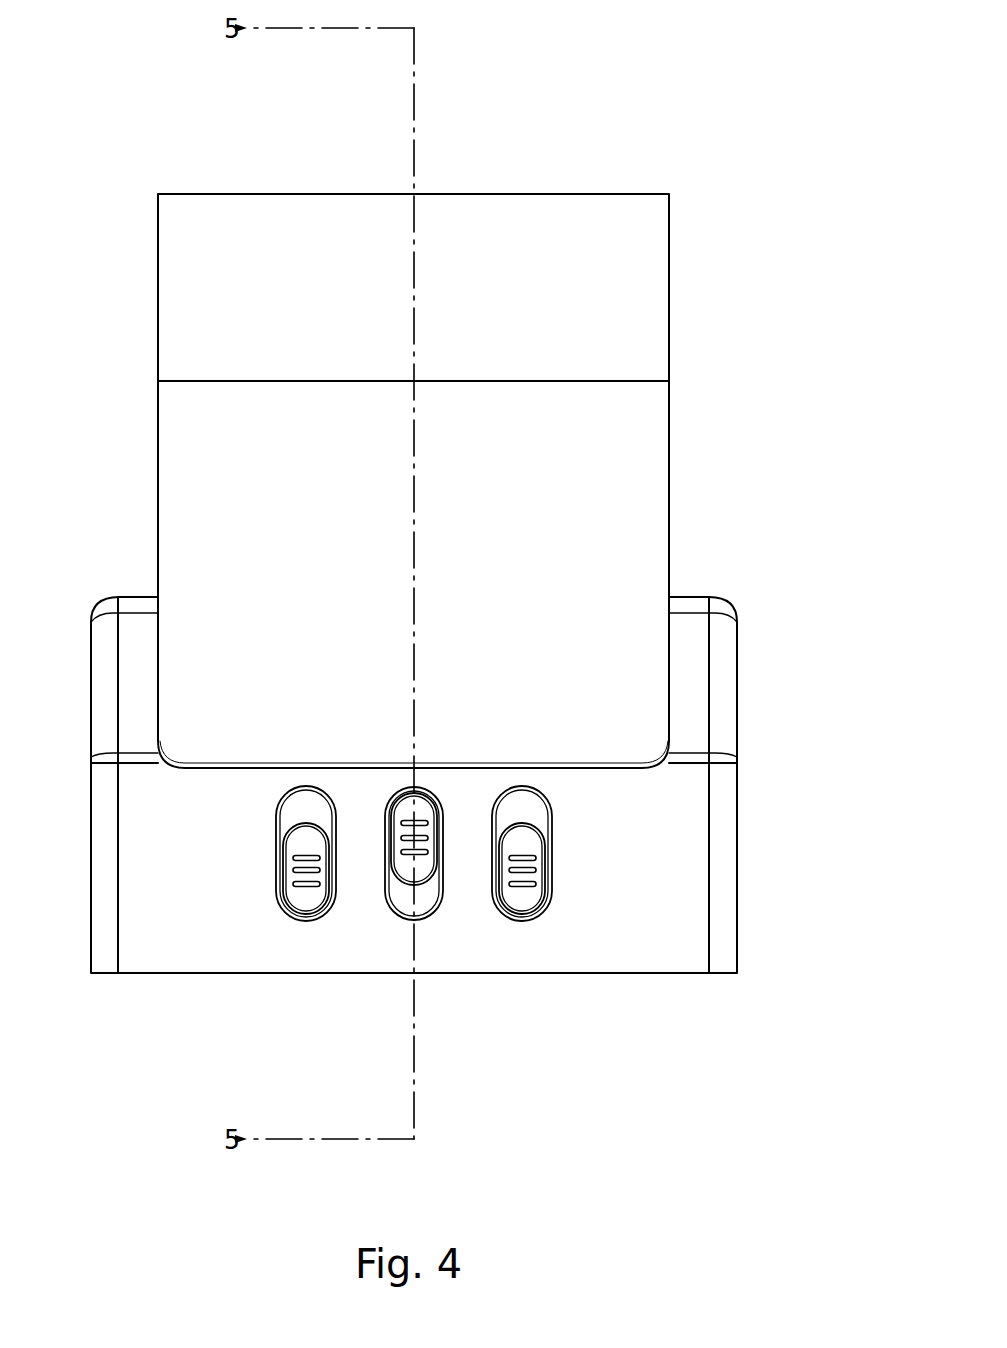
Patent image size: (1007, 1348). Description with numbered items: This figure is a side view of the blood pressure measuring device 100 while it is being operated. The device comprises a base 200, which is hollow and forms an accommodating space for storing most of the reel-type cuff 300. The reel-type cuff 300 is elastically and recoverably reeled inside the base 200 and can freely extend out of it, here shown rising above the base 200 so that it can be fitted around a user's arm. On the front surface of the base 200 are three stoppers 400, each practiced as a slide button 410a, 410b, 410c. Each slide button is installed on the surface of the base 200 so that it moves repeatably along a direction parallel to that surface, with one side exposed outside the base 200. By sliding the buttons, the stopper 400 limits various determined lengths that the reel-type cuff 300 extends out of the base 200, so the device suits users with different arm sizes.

The blood pressure measuring device 100 is at (762, 51).
The base 200 is at (738, 840).
The reel-type cuff 300 is at (670, 331).
The stopper 400 is at (277, 905).
The slide button 410a is at (309, 897).
The slide button 410b is at (423, 868).
The slide button 410c is at (527, 893).